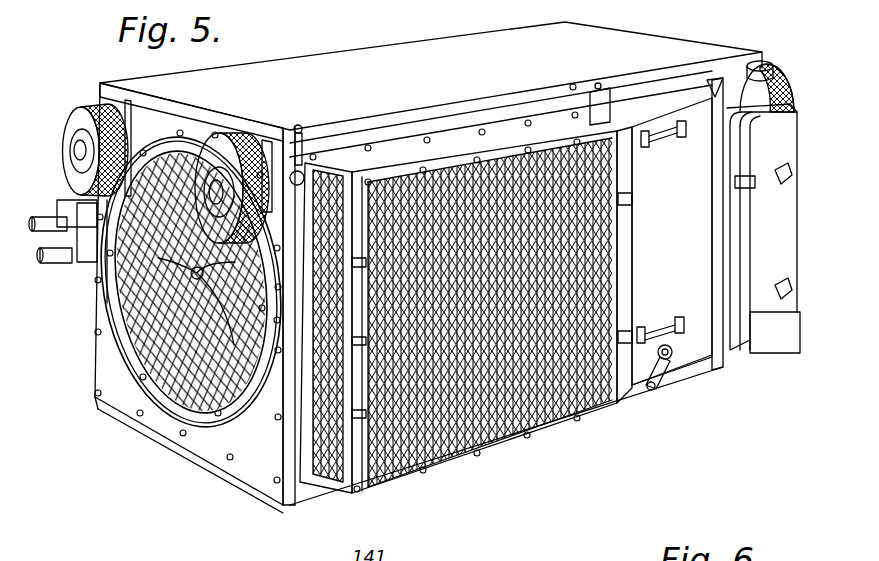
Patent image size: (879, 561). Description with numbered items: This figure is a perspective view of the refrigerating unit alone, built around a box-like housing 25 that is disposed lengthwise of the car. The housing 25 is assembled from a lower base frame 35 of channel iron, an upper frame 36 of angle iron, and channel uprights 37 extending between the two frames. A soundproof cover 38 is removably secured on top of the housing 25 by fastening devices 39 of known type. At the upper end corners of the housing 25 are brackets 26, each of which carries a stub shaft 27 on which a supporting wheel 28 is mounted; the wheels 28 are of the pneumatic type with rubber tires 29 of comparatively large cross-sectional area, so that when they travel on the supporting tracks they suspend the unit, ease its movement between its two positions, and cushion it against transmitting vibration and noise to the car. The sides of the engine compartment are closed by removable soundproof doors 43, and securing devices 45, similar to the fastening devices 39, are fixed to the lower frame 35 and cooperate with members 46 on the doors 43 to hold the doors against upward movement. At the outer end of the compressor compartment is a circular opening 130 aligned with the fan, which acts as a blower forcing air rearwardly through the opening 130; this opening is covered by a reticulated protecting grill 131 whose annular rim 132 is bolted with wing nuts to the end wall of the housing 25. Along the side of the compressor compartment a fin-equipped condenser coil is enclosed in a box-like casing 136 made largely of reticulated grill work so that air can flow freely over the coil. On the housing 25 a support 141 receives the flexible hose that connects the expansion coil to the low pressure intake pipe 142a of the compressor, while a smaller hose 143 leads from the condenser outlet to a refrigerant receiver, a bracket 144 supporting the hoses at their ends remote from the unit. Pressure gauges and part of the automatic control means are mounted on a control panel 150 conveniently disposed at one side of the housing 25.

The housing 25 is at (210, 478).
The brackets 26 is at (128, 104).
The stub shaft 27 is at (70, 152).
The supporting wheel 28 is at (66, 122).
The pneumatic rubber tire 29 is at (95, 102).
The base frame 35 is at (693, 370).
The upper frame 36 is at (408, 128).
The channel uprights 37 is at (292, 503).
The cover 38 is at (380, 57).
The fastening devices 39 is at (302, 140).
The doors 43 is at (664, 253).
The securing devices 45 is at (663, 373).
The members 46 is at (648, 390).
The circular opening 130 is at (177, 403).
The protecting grill 131 is at (143, 325).
The annular rim 132 is at (135, 353).
The casing 136 is at (477, 453).
The support 141 is at (82, 272).
The intake pipe 142a is at (50, 212).
The smaller hose 143 is at (55, 263).
The bracket 144 is at (661, 212).
The control panel 150 is at (785, 230).